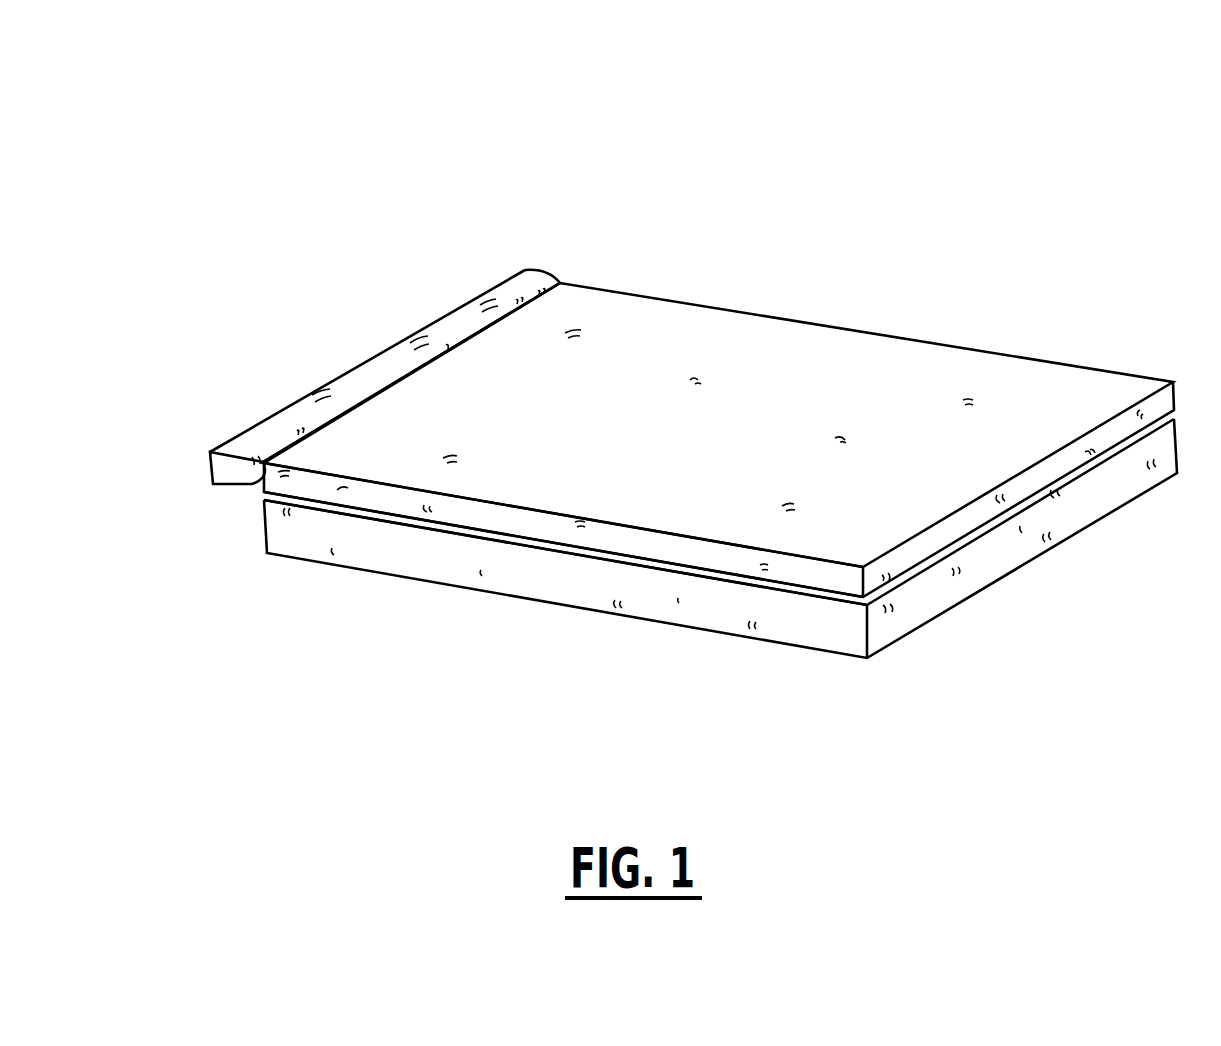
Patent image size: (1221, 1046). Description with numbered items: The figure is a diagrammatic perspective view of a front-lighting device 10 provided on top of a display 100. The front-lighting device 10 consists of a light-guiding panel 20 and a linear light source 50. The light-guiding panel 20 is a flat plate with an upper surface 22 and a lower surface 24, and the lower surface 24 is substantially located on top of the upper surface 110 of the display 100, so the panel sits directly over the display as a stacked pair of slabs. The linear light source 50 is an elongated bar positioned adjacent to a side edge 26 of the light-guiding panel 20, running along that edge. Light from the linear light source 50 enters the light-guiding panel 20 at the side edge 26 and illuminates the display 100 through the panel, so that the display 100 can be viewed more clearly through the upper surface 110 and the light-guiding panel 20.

The front-lighting device 10 is at (510, 221).
The light-guiding panel 20 is at (882, 380).
The upper surface 22 is at (837, 567).
The lower surface 24 is at (712, 568).
The side edge 26 is at (313, 430).
The linear light source 50 is at (397, 360).
The display 100 is at (933, 602).
The upper surface of the display 110 is at (375, 520).